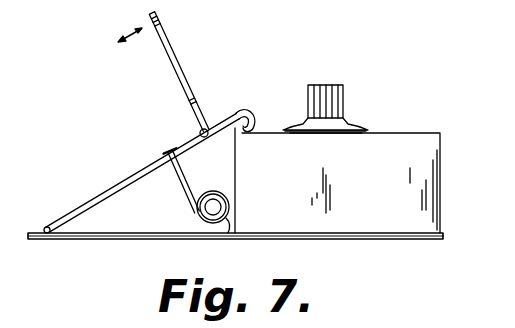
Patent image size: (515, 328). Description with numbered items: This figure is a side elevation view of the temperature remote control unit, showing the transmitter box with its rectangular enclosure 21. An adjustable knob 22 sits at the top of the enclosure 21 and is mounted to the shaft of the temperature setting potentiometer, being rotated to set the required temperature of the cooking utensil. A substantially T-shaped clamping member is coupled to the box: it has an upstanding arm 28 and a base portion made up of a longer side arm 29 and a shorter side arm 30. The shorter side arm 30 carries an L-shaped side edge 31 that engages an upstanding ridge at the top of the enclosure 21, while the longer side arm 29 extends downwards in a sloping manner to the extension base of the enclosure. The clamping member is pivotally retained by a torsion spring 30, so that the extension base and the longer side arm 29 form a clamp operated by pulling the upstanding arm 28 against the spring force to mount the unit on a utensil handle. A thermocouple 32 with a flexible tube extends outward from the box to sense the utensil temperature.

The rectangular enclosure 21 is at (441, 202).
The adjustable knob 22 is at (340, 86).
The upstanding arm 28 is at (168, 53).
The longer side arm 29 is at (100, 199).
The shorter side arm 30 is at (221, 124).
The L-shaped side edge 31 is at (250, 121).
The thermocouple 32 is at (237, 212).